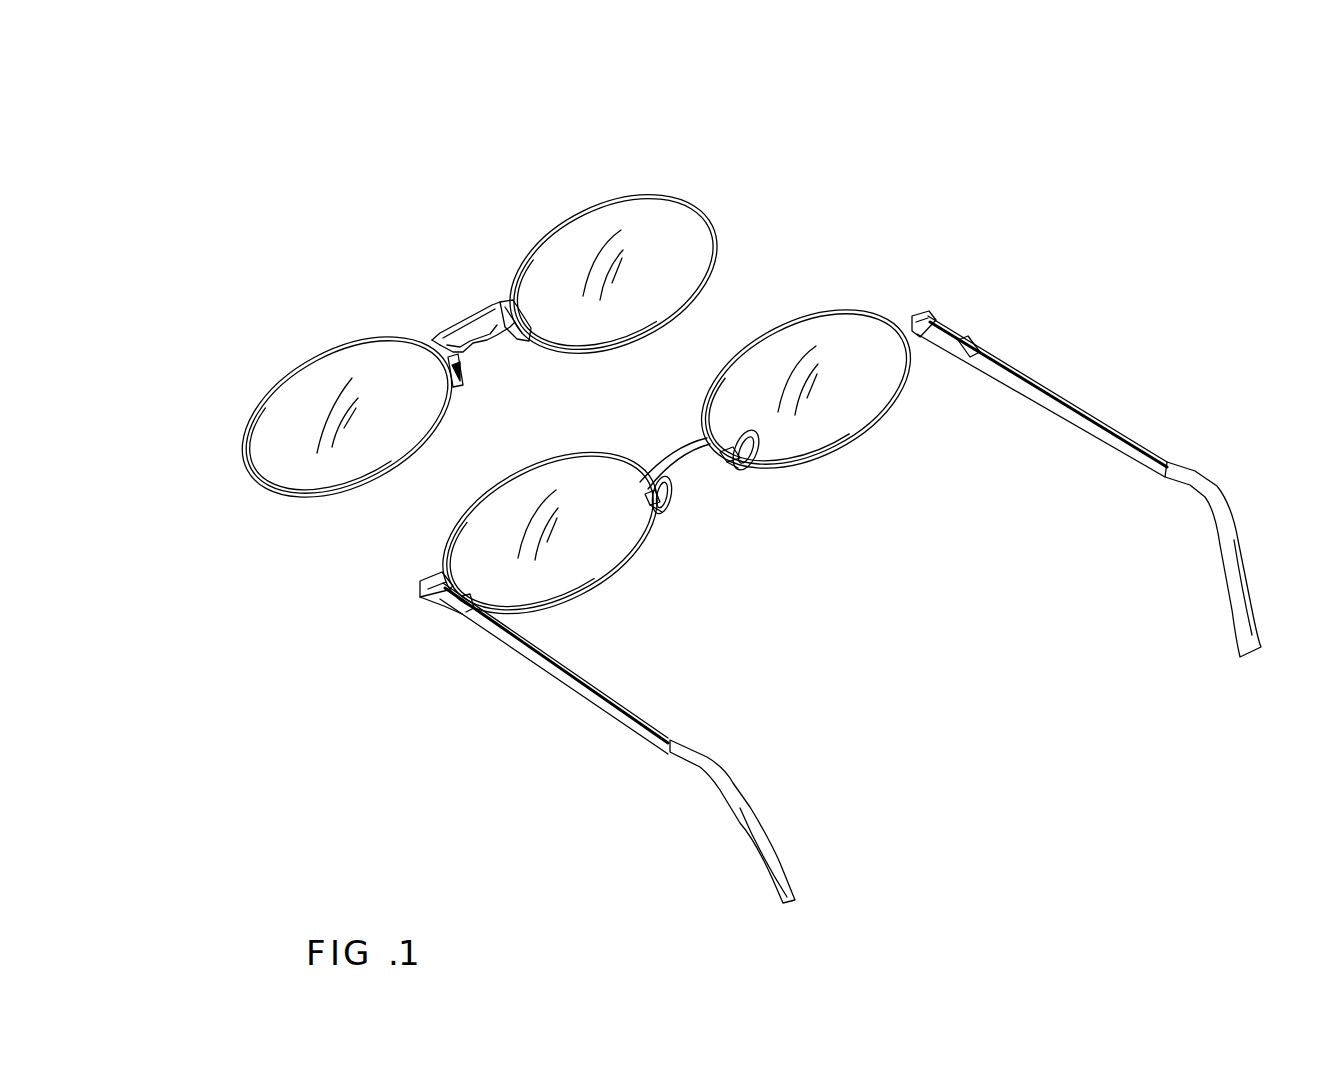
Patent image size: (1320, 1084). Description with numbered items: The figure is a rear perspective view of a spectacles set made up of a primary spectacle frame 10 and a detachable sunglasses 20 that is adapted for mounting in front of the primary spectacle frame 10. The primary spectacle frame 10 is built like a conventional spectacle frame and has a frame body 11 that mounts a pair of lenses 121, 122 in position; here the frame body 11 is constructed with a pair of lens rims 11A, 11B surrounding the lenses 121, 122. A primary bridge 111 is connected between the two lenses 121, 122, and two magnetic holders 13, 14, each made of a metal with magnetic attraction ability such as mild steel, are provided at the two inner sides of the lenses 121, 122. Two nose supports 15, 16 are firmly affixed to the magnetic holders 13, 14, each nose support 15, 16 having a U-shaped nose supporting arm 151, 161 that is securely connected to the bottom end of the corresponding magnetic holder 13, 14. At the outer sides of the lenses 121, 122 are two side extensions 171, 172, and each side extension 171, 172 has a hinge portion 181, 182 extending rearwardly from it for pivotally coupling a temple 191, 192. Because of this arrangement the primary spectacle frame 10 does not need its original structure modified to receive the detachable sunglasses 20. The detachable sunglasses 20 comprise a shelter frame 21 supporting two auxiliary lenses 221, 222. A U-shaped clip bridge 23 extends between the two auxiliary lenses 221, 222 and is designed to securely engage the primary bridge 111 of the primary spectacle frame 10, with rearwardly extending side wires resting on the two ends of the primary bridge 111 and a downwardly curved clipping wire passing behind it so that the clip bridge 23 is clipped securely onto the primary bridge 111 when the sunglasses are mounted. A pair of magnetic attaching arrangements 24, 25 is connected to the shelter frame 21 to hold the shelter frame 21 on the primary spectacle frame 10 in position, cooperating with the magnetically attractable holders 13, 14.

The primary spectacle frame 10 is at (979, 196).
The frame body 11 is at (837, 226).
The lens rim 11A is at (488, 482).
The lens rim 11B is at (780, 318).
The primary bridge 111 is at (685, 436).
The lens 121 is at (548, 568).
The lens 122 is at (860, 345).
The magnetic holder 13 is at (640, 492).
The nose supporting arm 151 is at (672, 508).
The nose support 15 is at (675, 500).
The magnetic holder 14 is at (718, 470).
The nose supporting arm 161 is at (735, 473).
The nose support 16 is at (748, 424).
The side extension 171 is at (420, 590).
The hinge portion 181 is at (468, 620).
The temple 191 is at (553, 683).
The side extension 172 is at (930, 312).
The hinge portion 182 is at (978, 345).
The temple 192 is at (1085, 408).
The detachable sunglasses 20 is at (437, 212).
The shelter frame 21 is at (665, 198).
The auxiliary lens 221 is at (323, 382).
The auxiliary lens 222 is at (568, 247).
The clip bridge 23 is at (470, 310).
The magnetic attaching arrangement 24 is at (462, 382).
The magnetic attaching arrangement 25 is at (520, 345).